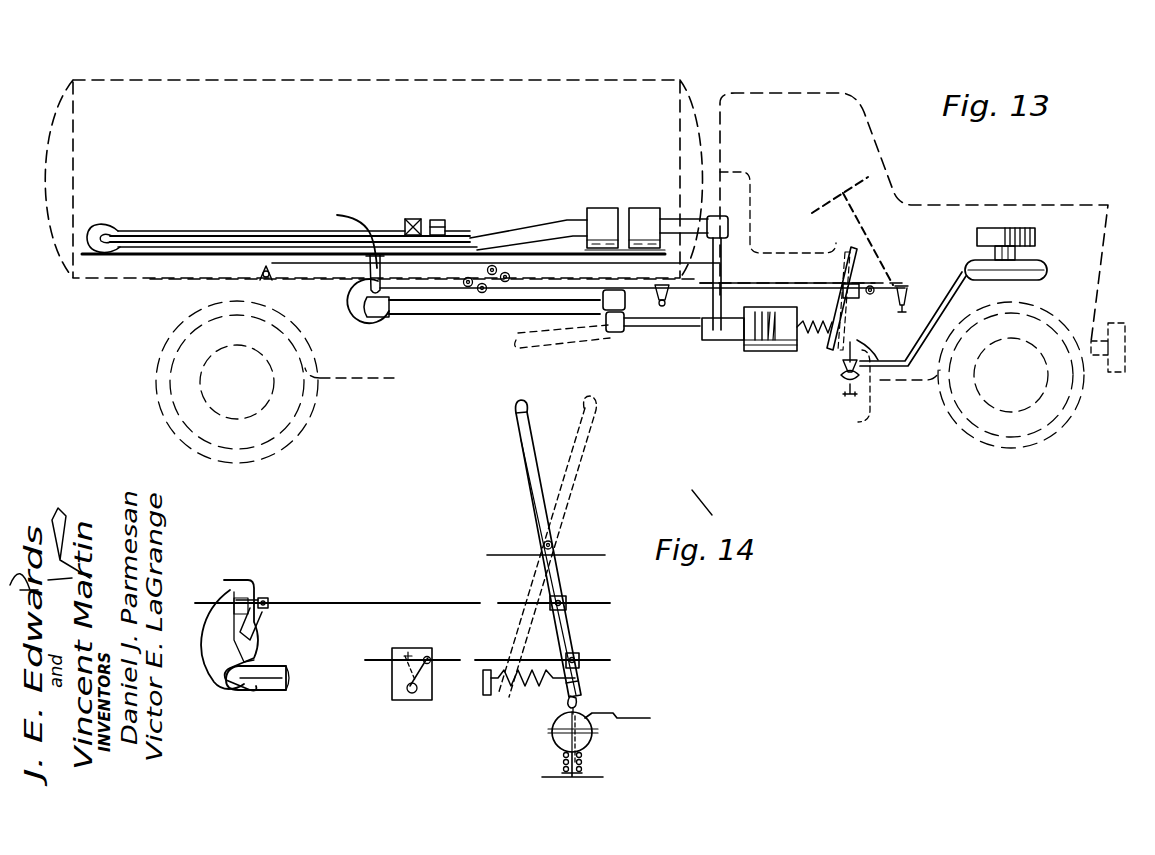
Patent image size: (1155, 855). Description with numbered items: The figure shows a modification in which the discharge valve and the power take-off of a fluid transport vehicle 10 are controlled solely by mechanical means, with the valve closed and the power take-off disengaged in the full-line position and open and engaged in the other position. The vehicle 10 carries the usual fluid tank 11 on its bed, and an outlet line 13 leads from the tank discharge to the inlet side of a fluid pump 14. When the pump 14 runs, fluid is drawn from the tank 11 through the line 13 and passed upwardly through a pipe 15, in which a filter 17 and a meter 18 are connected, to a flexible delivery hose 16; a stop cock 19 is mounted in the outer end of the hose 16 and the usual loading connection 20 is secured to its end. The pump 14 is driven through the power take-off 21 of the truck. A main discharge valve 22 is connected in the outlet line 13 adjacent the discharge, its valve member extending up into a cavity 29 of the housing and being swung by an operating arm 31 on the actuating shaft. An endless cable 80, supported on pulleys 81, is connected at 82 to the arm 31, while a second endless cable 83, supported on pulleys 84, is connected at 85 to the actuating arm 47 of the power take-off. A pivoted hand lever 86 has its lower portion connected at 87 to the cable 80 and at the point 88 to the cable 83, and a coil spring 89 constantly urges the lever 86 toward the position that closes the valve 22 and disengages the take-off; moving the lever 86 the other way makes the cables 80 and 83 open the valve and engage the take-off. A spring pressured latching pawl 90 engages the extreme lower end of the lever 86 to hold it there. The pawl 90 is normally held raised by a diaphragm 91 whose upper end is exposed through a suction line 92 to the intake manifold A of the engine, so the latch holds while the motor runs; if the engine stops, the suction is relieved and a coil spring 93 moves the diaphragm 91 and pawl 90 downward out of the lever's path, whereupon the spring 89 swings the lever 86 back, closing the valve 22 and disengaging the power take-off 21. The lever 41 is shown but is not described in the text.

In FIG. 13, the transport vehicle 10 is at (782, 93).
In FIG. 13, the fluid tank 11 is at (318, 80).
In FIG. 13, the outlet line 13 is at (418, 315).
In FIG. 14, the outlet line 13 is at (280, 690).
In FIG. 13, the fluid pump 14 is at (722, 351).
In FIG. 13, the pipe 15 is at (722, 258).
In FIG. 13, the flexible delivery hose 16 is at (195, 232).
In FIG. 13, the filter 17 is at (650, 208).
In FIG. 13, the meter 18 is at (595, 208).
In FIG. 13, the stop cock 19 is at (412, 219).
In FIG. 13, the loading end connection 20 is at (438, 220).
In FIG. 13, the power take-off 21 is at (768, 352).
In FIG. 14, the power take-off 21 is at (392, 684).
In FIG. 13, the main discharge valve 22 is at (372, 325).
In FIG. 14, the main discharge valve 22 is at (216, 690).
In FIG. 13, the cavity 29 is at (960, 282).
In FIG. 13, the operating arm 31 is at (366, 280).
In FIG. 14, the operating arm 31 is at (258, 618).
In FIG. 13, the lever 41 is at (758, 352).
In FIG. 14, the actuating arm of the power take-off 47 is at (432, 682).
In FIG. 13, the endless cable 80 is at (590, 283).
In FIG. 14, the endless cable 80 is at (416, 603).
In FIG. 13, the pulleys 81 is at (258, 272).
In FIG. 13, the cable connection 82 is at (337, 215).
In FIG. 13, the second endless cable 83 is at (690, 330).
In FIG. 14, the second endless cable 83 is at (482, 655).
In FIG. 13, the pulleys 84 is at (640, 326).
In FIG. 13, the cable connection 85 is at (788, 352).
In FIG. 13, the pivoted hand lever 86 is at (846, 252).
In FIG. 14, the pivoted hand lever 86 is at (560, 510).
In FIG. 13, the lever connection to cable 87 is at (852, 278).
In FIG. 14, the lever connection to cable 87 is at (568, 600).
In FIG. 13, the lever connection to second cable 88 is at (878, 360).
In FIG. 14, the lever connection to second cable 88 is at (582, 655).
In FIG. 14, the coil spring 89 is at (531, 688).
In FIG. 13, the latching pawl 90 is at (838, 385).
In FIG. 14, the latching pawl 90 is at (580, 700).
In FIG. 14, the diaphragm 91 is at (590, 742).
In FIG. 14, the suction line 92 is at (650, 716).
In FIG. 14, the coil spring 93 is at (590, 764).
In FIG. 13, the intake manifold A is at (1042, 262).